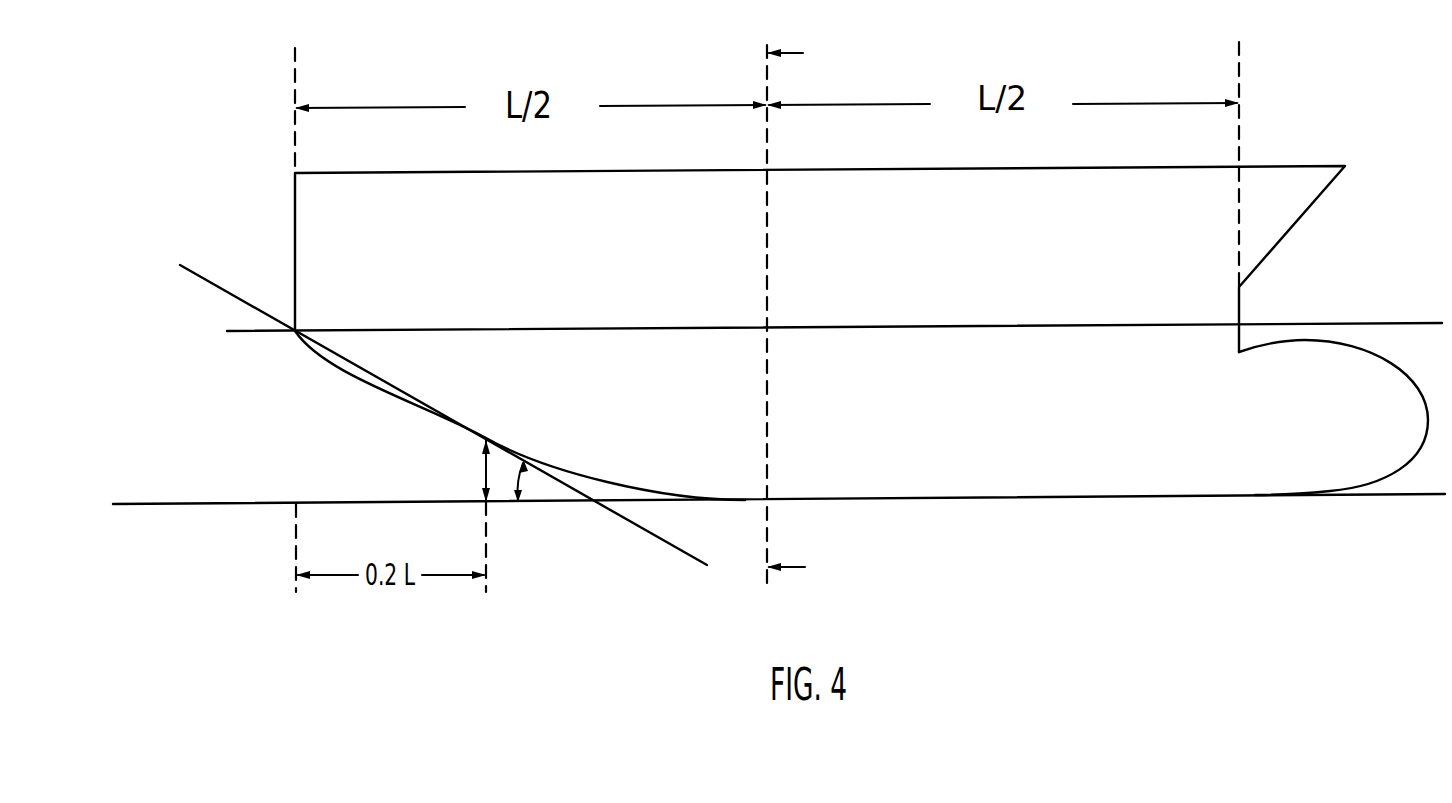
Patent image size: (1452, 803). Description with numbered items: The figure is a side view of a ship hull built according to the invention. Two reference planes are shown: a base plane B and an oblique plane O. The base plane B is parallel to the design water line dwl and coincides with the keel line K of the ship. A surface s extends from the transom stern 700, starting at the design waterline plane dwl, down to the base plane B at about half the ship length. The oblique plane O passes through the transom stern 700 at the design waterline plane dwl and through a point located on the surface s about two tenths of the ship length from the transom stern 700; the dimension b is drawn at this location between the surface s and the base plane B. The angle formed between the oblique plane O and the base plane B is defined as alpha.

The transom stern 700 is at (294, 213).
The design water line dwl is at (1022, 325).
The base plane B is at (197, 505).
The keel line K is at (1160, 497).
The oblique plane O is at (224, 290).
The surface s is at (392, 394).
The bow curve offset height b is at (475, 471).